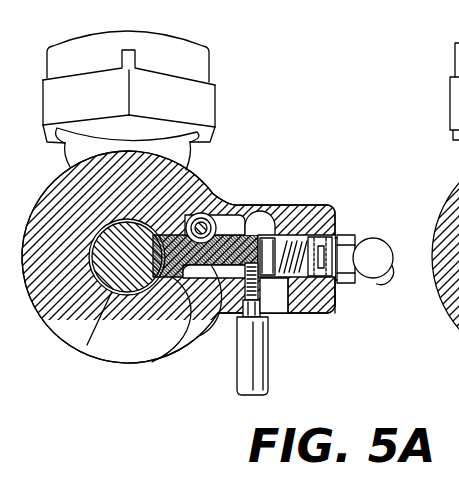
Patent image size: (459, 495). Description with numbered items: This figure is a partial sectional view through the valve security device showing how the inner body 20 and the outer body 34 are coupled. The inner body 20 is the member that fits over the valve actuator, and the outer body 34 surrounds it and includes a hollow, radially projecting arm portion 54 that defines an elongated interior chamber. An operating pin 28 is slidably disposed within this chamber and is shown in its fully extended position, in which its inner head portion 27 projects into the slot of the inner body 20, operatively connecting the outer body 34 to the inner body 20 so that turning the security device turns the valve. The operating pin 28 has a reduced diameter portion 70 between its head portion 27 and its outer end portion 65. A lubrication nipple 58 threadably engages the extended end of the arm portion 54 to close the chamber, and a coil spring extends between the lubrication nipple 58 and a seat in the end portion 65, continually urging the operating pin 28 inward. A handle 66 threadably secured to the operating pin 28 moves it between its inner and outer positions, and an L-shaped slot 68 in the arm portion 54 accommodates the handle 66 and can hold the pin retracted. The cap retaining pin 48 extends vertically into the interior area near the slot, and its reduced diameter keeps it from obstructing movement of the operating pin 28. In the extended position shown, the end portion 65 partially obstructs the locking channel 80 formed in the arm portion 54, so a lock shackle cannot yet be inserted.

The inner body 20 is at (83, 347).
The outer body 34 is at (104, 362).
The inner head portion 27 is at (152, 362).
The operating pin 28 is at (197, 337).
The cap retaining pin 48 is at (205, 214).
The locking channel 80 is at (259, 222).
The outer end portion 65 is at (278, 208).
The lubrication nipple 58 is at (381, 243).
The reduced diameter portion 70 is at (222, 316).
The handle 66 is at (262, 360).
The L-shaped slot 68 is at (277, 298).
The arm portion 54 is at (333, 312).